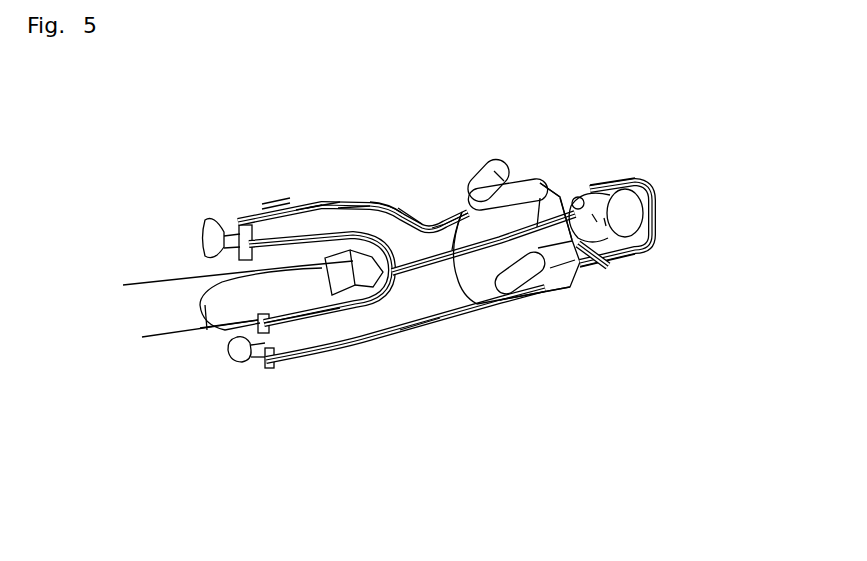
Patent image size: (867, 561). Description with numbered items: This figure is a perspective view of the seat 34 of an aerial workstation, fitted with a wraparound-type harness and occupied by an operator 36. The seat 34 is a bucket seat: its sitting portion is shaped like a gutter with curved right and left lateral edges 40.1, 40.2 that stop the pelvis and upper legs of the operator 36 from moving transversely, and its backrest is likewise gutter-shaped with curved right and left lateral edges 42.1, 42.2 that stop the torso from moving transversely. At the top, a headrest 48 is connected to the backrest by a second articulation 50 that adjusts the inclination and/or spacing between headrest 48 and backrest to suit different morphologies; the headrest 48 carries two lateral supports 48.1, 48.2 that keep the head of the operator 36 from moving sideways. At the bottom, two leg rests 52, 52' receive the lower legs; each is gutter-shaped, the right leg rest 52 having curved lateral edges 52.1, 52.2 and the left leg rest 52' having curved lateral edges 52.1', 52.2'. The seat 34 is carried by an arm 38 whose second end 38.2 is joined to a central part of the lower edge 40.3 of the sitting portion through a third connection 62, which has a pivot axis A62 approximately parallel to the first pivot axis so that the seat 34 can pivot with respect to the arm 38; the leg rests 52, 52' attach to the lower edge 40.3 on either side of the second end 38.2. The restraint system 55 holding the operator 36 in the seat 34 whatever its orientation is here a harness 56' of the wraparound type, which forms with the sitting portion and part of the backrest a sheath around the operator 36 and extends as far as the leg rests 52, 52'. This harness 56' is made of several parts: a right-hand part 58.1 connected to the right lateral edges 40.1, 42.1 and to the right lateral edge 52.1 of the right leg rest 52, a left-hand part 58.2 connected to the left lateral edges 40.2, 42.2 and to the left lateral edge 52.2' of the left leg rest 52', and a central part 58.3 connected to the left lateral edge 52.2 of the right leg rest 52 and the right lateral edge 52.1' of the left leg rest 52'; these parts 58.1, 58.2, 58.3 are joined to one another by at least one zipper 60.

The seat 34 is at (510, 325).
The operator 36 is at (558, 206).
The arm 38 is at (160, 274).
The second end 38.2 is at (302, 268).
The right lateral edge 40.1 is at (398, 207).
The left lateral edge 40.2 is at (403, 337).
The lower edge 40.3 is at (307, 207).
The right lateral edge 42.1 is at (455, 210).
The left lateral edge 42.2 is at (513, 307).
The headrest 48 is at (653, 213).
The lateral support 48.1 is at (613, 180).
The lateral support 48.2 is at (638, 255).
The second articulation 50 is at (606, 268).
The right leg rest 52 is at (297, 213).
The right lateral edge 52.1 is at (267, 153).
The left lateral edge 52.2 is at (209, 179).
The left leg rest 52' is at (320, 325).
The right lateral edge 52.1' is at (277, 379).
The left lateral edge 52.2' is at (342, 384).
The restraint system 55 is at (376, 218).
The harness 56' is at (442, 198).
The right-hand part 58.1 is at (338, 207).
The left-hand part 58.2 is at (428, 287).
The central part 58.3 is at (262, 203).
The zipper 60 is at (479, 312).
The third connection 62 is at (369, 303).
The pivot axis A62 is at (205, 305).